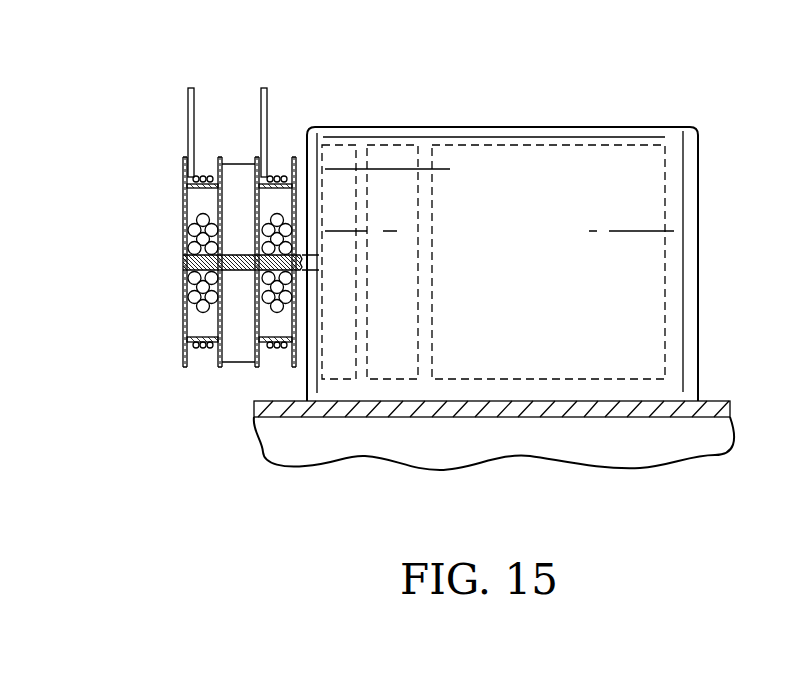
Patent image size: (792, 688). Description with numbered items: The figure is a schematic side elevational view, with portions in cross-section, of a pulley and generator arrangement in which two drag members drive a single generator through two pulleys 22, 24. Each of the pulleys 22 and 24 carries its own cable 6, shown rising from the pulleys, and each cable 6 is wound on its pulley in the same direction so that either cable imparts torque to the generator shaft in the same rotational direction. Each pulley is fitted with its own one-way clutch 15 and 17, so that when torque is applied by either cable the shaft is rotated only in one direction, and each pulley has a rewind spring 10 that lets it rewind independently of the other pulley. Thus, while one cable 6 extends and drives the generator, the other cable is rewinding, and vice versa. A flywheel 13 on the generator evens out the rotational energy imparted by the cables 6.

The cable 6 is at (190, 110).
The rewind spring 10 is at (187, 284).
The flywheel 13 is at (402, 145).
The one-way clutch 15 is at (343, 145).
The one-way clutch 17 is at (239, 362).
The pulley 22 is at (276, 162).
The pulley 24 is at (183, 207).